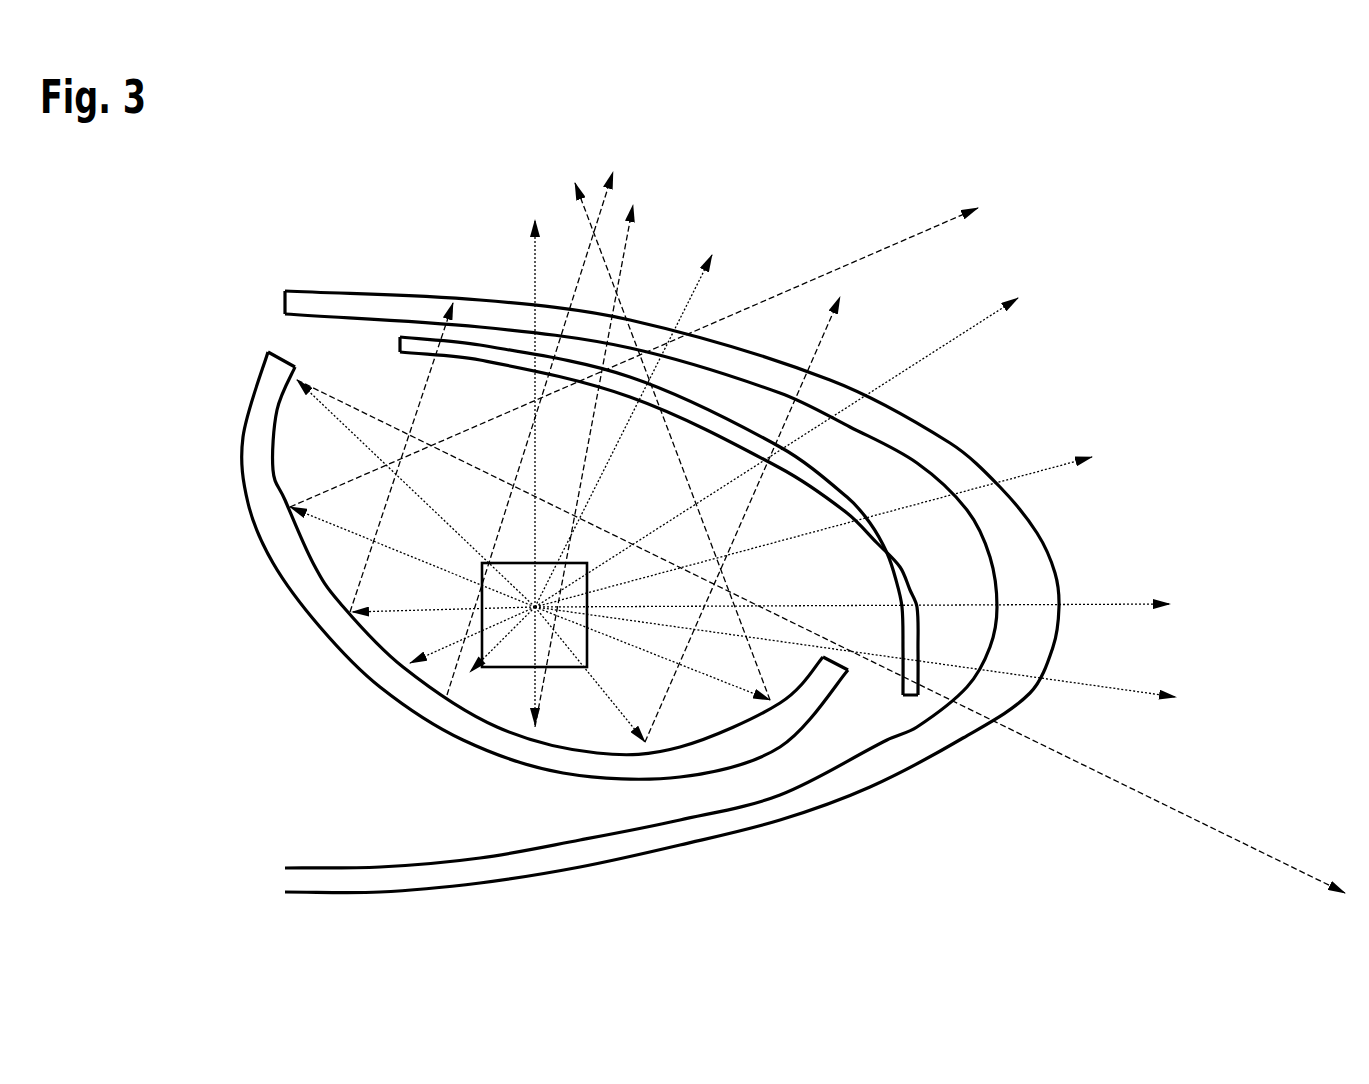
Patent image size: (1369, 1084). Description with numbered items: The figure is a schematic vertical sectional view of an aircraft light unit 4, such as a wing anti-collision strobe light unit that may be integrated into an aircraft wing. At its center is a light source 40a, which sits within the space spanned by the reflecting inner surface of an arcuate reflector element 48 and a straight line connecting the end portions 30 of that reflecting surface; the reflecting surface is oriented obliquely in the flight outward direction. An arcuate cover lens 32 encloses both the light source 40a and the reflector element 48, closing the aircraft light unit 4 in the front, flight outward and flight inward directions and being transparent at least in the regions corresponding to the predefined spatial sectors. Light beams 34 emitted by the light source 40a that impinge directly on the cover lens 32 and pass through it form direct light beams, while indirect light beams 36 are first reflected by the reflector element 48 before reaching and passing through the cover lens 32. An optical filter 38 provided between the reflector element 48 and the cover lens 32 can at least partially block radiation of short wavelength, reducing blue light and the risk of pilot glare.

The aircraft light unit 4 is at (176, 240).
The end portions 30 is at (278, 352).
The cover lens 32 is at (957, 438).
The light beams 34 is at (532, 266).
The indirect light beams 36 is at (417, 398).
The optical filter 38 is at (897, 547).
The light source 40a is at (500, 657).
The reflector element 48 is at (330, 617).